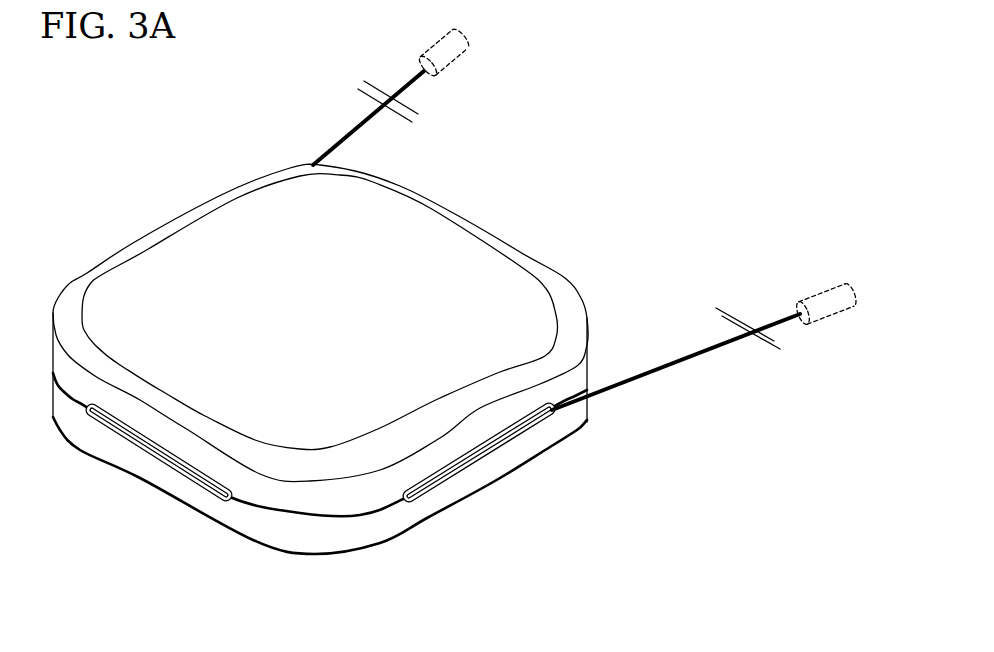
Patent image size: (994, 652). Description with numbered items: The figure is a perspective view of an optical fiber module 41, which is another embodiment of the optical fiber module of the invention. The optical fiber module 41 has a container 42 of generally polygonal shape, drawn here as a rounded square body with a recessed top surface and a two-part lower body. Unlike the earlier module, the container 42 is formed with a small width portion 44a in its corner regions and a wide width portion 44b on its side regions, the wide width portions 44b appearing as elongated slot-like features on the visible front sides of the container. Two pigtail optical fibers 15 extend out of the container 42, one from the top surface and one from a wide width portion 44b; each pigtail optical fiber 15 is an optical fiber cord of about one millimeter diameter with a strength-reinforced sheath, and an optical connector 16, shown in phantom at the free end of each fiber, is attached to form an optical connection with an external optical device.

The pigtail optical fiber 15 is at (348, 135).
The optical connector 16 is at (457, 57).
The optical fiber module 41 is at (336, 386).
The container 42 is at (453, 212).
The small width portion 44a is at (318, 517).
The wide width portion 44b is at (150, 460).